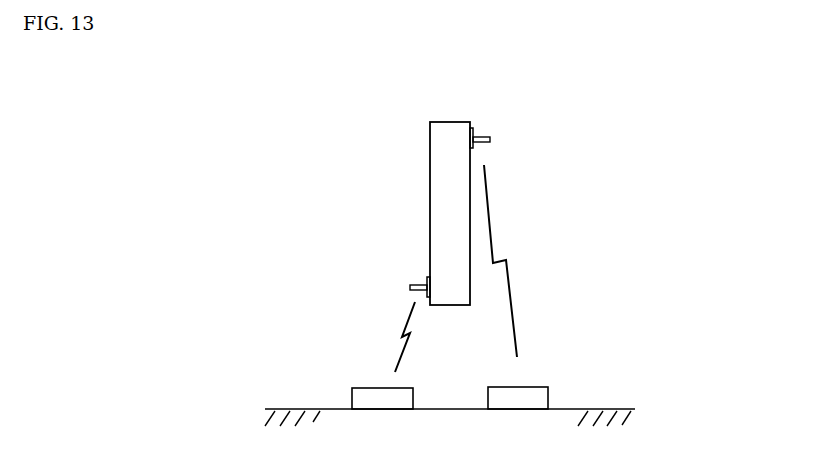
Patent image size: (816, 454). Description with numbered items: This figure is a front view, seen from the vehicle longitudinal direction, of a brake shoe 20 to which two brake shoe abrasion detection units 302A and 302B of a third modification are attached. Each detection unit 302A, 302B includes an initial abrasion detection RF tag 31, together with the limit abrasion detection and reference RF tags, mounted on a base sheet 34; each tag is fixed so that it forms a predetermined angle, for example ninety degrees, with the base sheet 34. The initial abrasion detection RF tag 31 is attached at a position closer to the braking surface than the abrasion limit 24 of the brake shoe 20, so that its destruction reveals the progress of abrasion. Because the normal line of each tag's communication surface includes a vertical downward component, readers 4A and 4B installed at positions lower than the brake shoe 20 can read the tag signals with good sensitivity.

The brake shoe 20 is at (437, 158).
The abrasion limit 24 is at (428, 277).
The base sheet 34 is at (472, 123).
The initial abrasion detection RF tag 31 is at (490, 139).
The brake shoe abrasion detection unit 302A is at (399, 277).
The brake shoe abrasion detection unit 302B is at (497, 120).
The reader 4A is at (360, 388).
The reader 4B is at (533, 387).